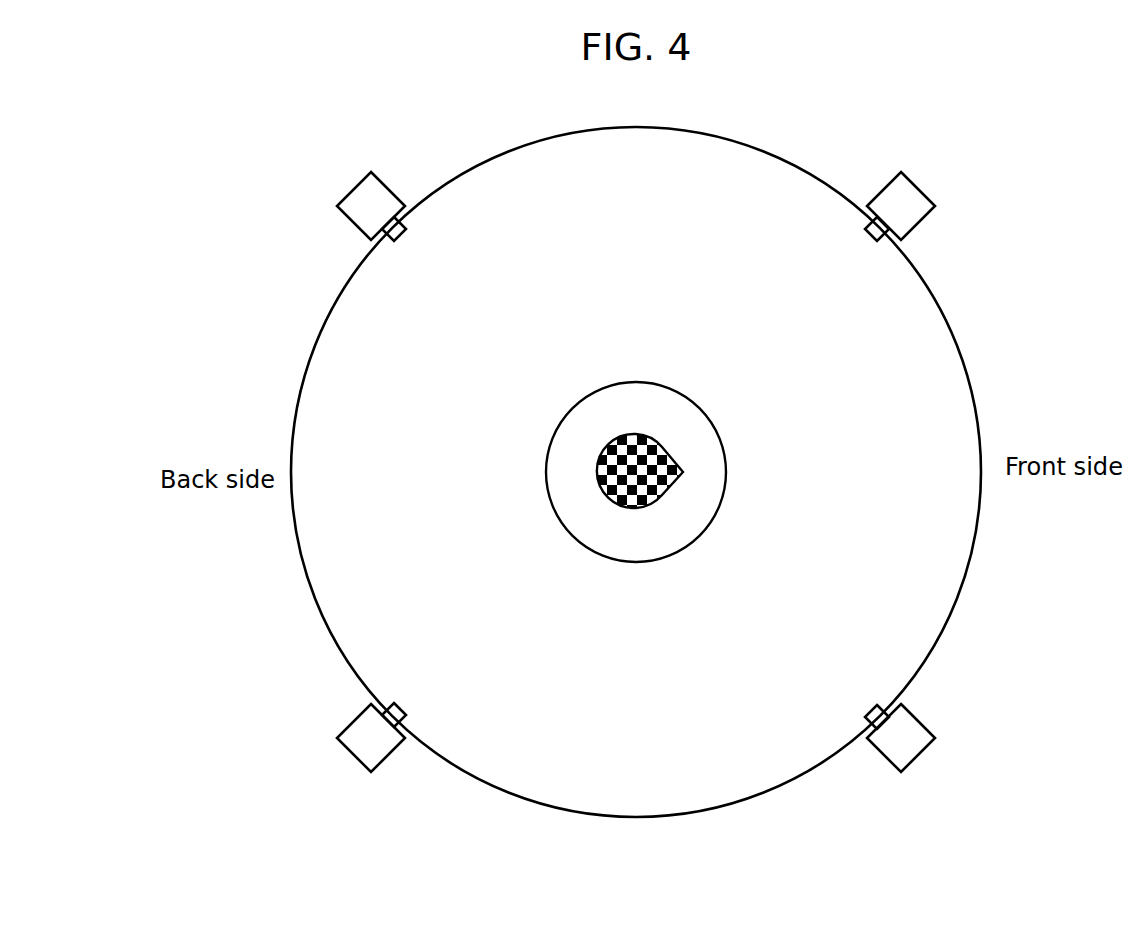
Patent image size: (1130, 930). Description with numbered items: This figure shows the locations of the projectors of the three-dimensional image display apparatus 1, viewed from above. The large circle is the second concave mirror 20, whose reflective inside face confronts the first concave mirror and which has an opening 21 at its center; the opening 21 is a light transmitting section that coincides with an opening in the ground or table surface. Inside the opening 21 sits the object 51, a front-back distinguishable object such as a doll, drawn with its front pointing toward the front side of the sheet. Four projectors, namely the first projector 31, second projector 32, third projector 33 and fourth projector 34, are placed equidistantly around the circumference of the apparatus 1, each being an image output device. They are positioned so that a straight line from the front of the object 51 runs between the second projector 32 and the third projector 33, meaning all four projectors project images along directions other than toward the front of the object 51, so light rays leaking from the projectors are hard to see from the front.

The three-dimensional image display apparatus 1 is at (207, 160).
The second concave mirror 20 is at (292, 445).
The opening 21 is at (648, 383).
The object 51 is at (598, 472).
The first projector 31 is at (352, 191).
The second projector 32 is at (923, 748).
The third projector 33 is at (920, 190).
The fourth projector 34 is at (345, 745).